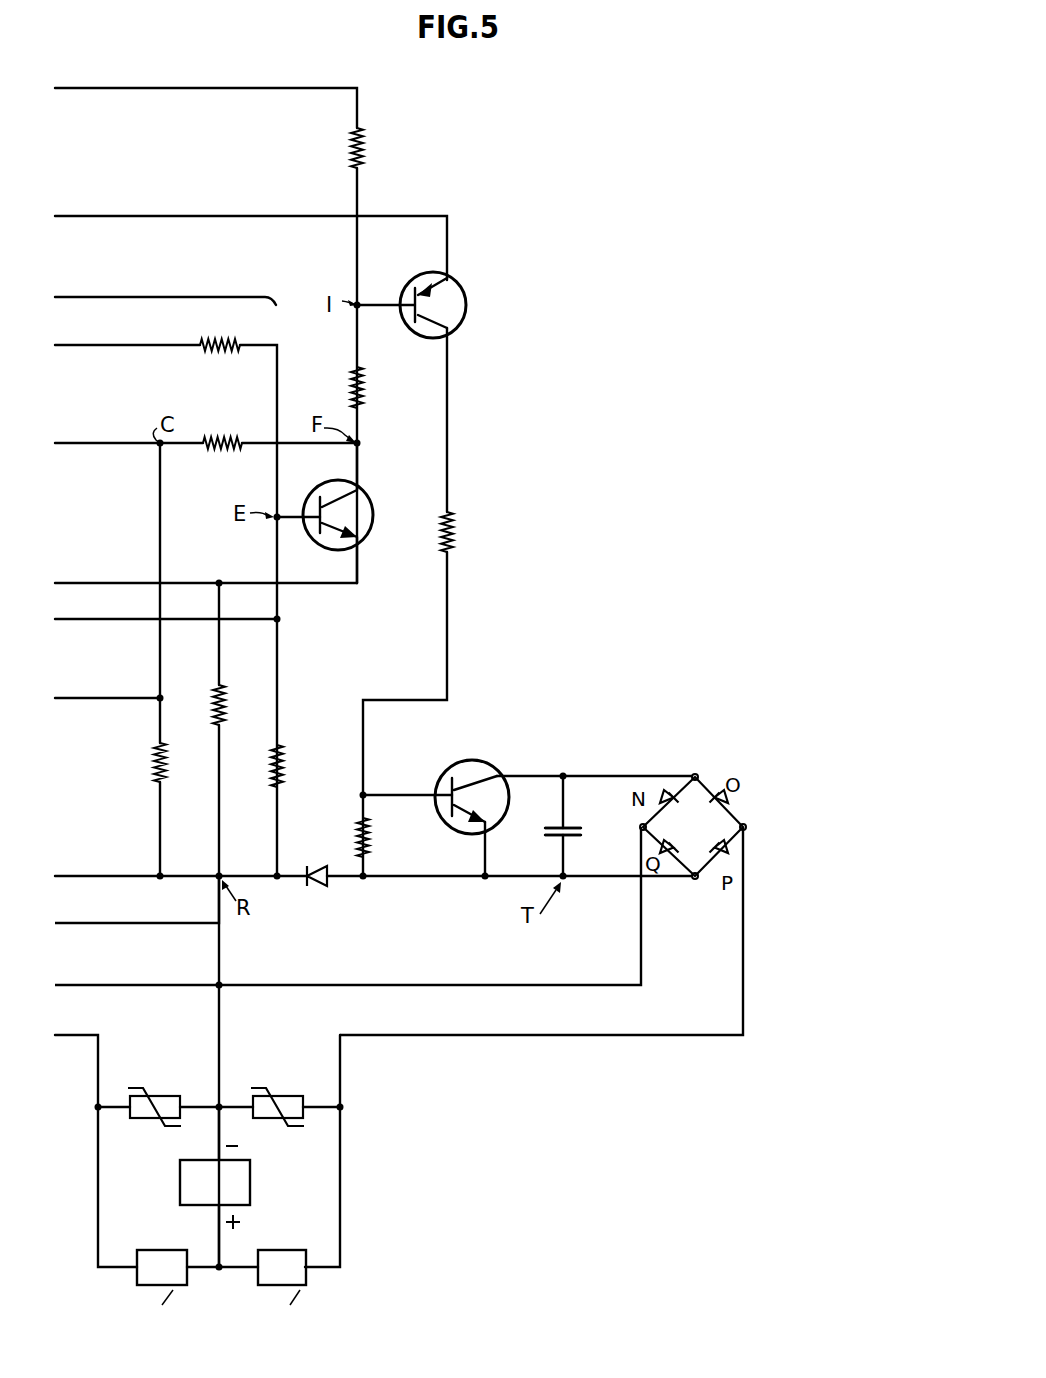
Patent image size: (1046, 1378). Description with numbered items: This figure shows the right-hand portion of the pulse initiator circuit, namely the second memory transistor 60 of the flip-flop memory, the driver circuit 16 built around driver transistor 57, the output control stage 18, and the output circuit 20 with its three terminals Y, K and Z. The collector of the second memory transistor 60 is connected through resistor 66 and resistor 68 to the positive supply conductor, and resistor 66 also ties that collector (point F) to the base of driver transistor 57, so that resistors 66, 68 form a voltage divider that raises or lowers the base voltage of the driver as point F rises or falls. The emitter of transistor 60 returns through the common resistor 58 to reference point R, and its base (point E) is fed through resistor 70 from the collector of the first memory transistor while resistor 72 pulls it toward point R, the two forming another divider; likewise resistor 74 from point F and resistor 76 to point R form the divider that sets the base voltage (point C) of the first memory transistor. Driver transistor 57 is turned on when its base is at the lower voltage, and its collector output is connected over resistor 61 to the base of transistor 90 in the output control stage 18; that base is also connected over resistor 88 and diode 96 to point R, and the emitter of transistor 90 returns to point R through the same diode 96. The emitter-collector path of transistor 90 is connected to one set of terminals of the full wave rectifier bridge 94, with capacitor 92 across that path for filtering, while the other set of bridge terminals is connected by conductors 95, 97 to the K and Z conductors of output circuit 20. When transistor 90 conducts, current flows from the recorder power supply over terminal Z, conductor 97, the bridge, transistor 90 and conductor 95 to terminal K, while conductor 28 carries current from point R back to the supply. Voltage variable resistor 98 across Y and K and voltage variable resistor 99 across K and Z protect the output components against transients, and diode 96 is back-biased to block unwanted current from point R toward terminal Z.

The driver circuit 16 is at (590, 290).
The output control stage 18 is at (574, 777).
The output circuit 20 is at (310, 1187).
The conductor 28 is at (124, 923).
The driver transistor 57 is at (458, 313).
The common resistor 58 is at (229, 708).
The second memory transistor 60 is at (334, 488).
The resistor 61 is at (457, 530).
The resistor 66 is at (381, 387).
The resistor 68 is at (366, 154).
The resistor 70 is at (222, 340).
The resistor 72 is at (287, 772).
The resistor 74 is at (229, 427).
The resistor 76 is at (170, 765).
The resistor 88 is at (372, 830).
The transistor 90 is at (498, 803).
The capacitor 92 is at (578, 836).
The full wave rectifier bridge 94 is at (693, 826).
The conductor 95 is at (523, 986).
The diode 96 is at (319, 866).
The conductor 97 is at (522, 1034).
The voltage variable resistor 98 is at (177, 1098).
The voltage variable resistor 99 is at (276, 1100).